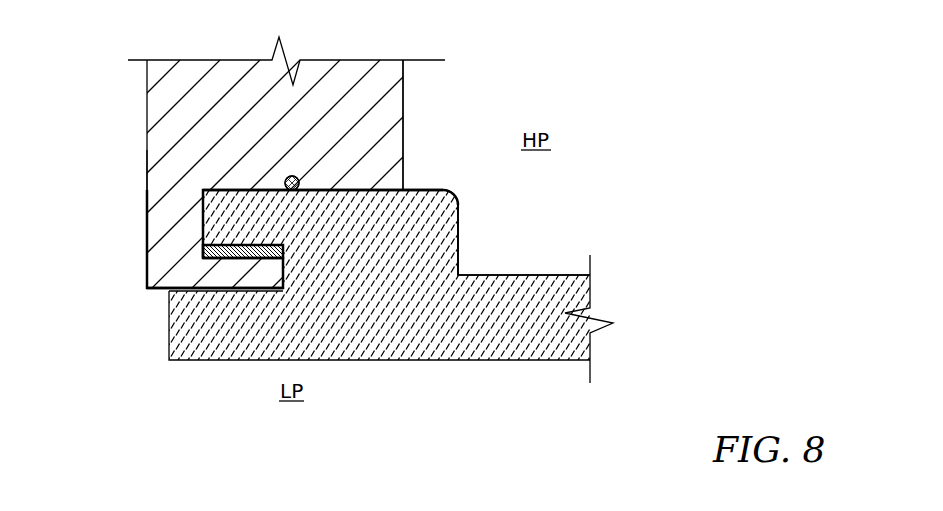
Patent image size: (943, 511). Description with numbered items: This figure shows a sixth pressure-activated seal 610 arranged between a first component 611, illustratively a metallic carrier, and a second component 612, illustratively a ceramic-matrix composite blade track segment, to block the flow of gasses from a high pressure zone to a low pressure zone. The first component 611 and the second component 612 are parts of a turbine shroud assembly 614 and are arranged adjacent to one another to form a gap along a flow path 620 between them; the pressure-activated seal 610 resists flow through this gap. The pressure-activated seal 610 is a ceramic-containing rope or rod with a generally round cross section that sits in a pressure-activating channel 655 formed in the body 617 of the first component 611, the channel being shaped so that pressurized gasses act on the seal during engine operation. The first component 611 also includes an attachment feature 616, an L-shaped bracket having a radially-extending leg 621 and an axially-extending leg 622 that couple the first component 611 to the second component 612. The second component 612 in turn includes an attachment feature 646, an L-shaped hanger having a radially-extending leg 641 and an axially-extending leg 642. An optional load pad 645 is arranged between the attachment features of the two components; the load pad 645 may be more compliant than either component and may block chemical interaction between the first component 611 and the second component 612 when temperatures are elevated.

The pressure-activated seal 610 is at (300, 183).
The first component 611 is at (147, 129).
The second component 612 is at (398, 362).
The turbine shroud assembly 614 is at (518, 90).
The attachment feature 616 is at (147, 182).
The body 617 is at (378, 84).
The flow path 620 is at (400, 186).
The radially-extending leg 621 is at (160, 220).
The axially-extending leg 622 is at (218, 278).
The radially-extending leg 641 is at (423, 262).
The axially-extending leg 642 is at (372, 206).
The load pad 645 is at (251, 246).
The attachment feature 646 is at (463, 222).
The pressure-activating channel 655 is at (289, 178).